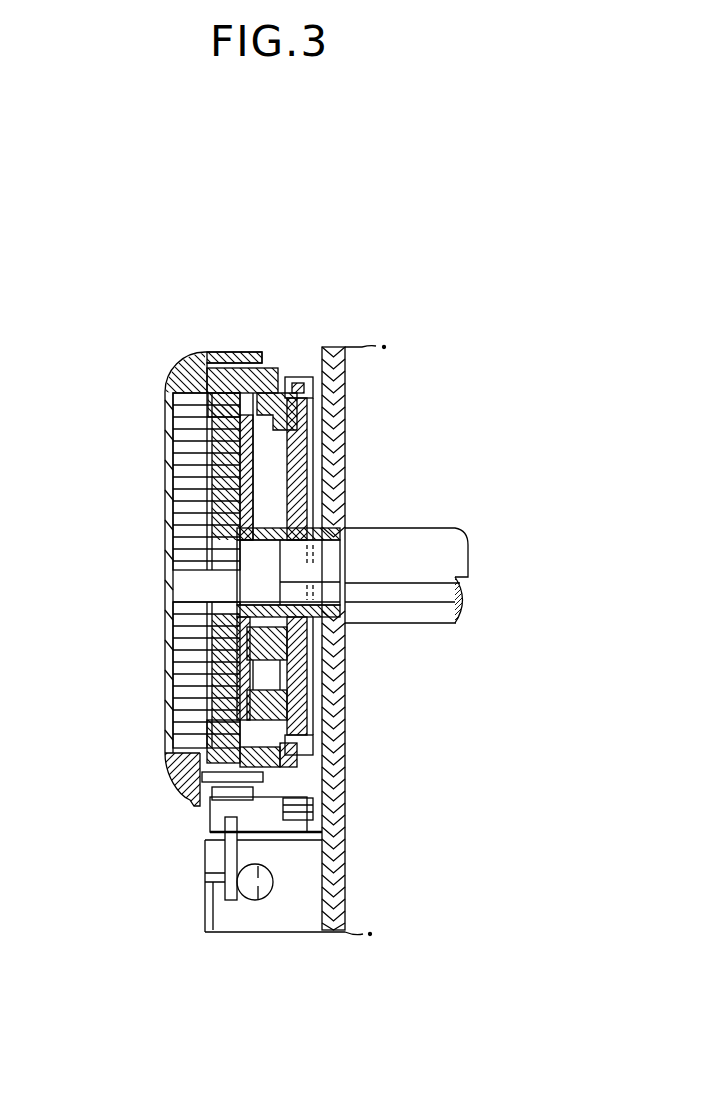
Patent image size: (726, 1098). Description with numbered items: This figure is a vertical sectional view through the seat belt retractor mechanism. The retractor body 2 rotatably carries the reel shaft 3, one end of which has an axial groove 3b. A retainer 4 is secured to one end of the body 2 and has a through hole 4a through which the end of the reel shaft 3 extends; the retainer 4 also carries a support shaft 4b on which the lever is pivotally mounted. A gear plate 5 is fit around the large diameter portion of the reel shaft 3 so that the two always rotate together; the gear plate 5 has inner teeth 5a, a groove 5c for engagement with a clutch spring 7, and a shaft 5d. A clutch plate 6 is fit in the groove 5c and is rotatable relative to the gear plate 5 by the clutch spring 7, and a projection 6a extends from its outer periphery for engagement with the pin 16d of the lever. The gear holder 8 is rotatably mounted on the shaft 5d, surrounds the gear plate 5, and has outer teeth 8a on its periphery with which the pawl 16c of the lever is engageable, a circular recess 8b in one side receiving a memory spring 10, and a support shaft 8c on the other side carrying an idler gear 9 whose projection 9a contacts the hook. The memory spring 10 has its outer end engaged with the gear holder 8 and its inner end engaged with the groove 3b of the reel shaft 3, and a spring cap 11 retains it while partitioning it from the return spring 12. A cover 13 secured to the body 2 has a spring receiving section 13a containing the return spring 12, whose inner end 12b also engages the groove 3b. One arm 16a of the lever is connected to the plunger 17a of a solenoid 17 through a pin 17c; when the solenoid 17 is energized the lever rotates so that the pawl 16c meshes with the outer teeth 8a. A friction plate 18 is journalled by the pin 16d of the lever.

The body 2 is at (347, 452).
The reel shaft 3 is at (433, 598).
The axial groove 3b is at (182, 590).
The retainer 4 is at (327, 470).
The through hole 4a is at (343, 635).
The support shaft 4b is at (340, 833).
The gear plate 5 is at (310, 490).
The inner teeth 5a is at (310, 432).
The groove 5c is at (292, 413).
The shaft 5d is at (305, 508).
The clutch plate 6 is at (291, 358).
The projection 6a is at (285, 798).
The clutch spring 7 is at (307, 360).
The gear holder 8 is at (205, 352).
The outer teeth 8a is at (243, 352).
The circular recess 8b is at (200, 387).
The support shaft 8c is at (245, 668).
The idler gear 9 is at (290, 700).
The projection 9a is at (245, 628).
The memory spring 10 is at (228, 468).
The spring cap 11 is at (207, 423).
The return spring 12 is at (193, 508).
The inner end 12b is at (188, 555).
The cover 13 is at (167, 653).
The spring receiving section 13a is at (168, 725).
The arm 16a is at (233, 850).
The pawl 16c is at (212, 788).
The pin 16d is at (315, 797).
The solenoid 17 is at (255, 923).
The plunger 17a is at (272, 893).
The pin 17c is at (217, 930).
The friction plate 18 is at (307, 768).